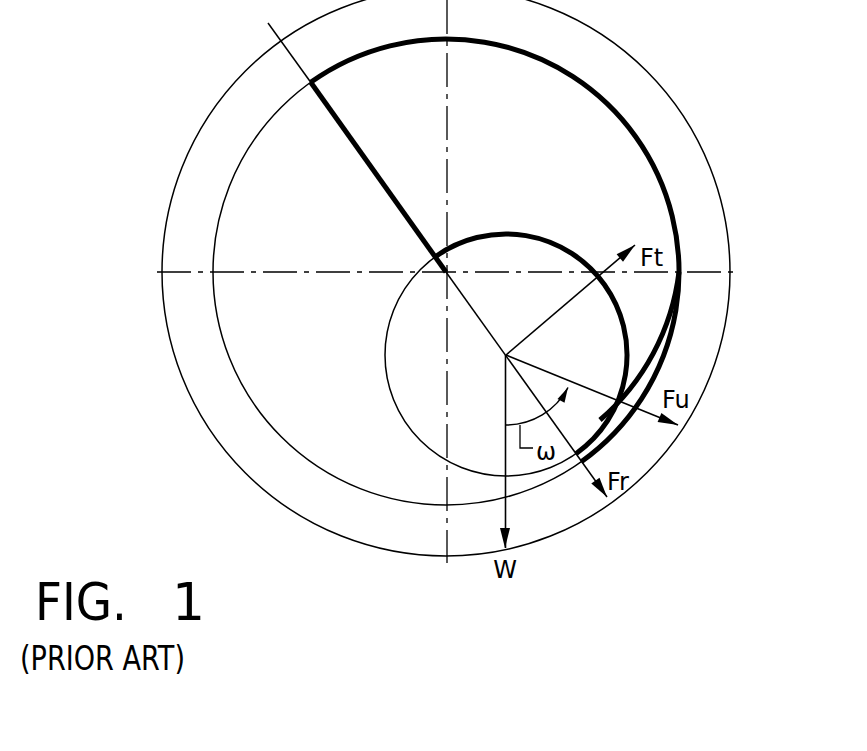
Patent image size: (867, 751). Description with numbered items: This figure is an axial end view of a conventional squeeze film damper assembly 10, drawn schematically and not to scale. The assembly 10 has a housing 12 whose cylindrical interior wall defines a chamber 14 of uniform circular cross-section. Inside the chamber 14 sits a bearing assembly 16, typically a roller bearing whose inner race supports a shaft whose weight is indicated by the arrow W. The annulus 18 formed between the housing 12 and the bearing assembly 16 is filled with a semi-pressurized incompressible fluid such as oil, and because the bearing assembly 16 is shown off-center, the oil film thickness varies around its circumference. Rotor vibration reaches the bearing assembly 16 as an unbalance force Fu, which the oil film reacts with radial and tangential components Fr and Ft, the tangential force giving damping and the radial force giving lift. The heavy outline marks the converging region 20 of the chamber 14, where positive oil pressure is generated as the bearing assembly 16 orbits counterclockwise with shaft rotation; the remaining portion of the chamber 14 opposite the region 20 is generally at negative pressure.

The squeeze film damper assembly 10 is at (210, 90).
The housing 12 is at (632, 78).
The chamber 14 is at (562, 72).
The bearing assembly 16 is at (435, 410).
The annulus 18 is at (285, 368).
The converging region 20 is at (682, 217).